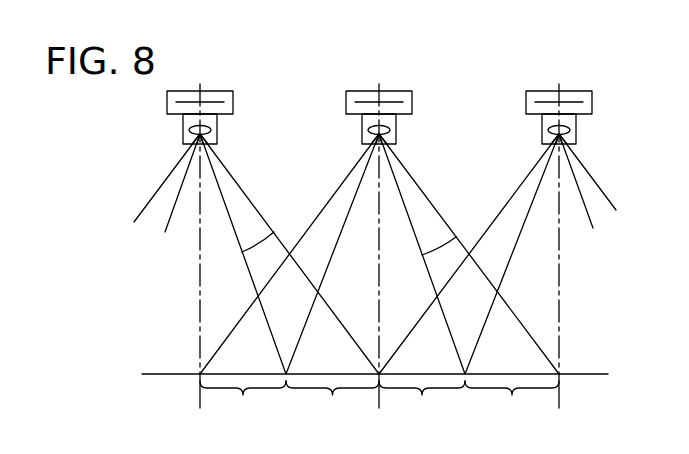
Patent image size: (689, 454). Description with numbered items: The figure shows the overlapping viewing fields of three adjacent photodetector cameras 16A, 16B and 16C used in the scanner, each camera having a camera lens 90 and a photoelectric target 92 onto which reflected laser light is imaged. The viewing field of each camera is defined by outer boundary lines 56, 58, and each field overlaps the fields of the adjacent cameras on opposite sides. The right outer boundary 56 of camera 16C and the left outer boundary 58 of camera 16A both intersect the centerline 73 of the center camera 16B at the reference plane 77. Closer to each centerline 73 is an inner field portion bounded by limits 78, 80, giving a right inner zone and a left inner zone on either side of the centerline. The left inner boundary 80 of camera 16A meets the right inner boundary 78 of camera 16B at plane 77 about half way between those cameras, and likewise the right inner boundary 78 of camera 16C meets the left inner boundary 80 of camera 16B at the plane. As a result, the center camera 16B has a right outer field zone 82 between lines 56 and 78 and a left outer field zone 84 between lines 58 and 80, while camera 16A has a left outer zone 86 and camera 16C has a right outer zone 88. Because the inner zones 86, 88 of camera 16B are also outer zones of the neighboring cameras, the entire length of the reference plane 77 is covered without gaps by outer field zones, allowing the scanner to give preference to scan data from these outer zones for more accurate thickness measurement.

The camera 16A is at (577, 90).
The camera 16B is at (401, 89).
The camera 16C is at (212, 89).
The photoelectric target 92 is at (372, 99).
The camera lens 90 is at (391, 129).
The right outer boundary line 56 is at (228, 172).
The left outer boundary line 58 is at (147, 203).
The left inner field boundary 80 is at (174, 210).
The right inner field boundary 78 is at (274, 232).
The centerline 73 is at (197, 301).
The reference plane 77 is at (163, 373).
The left outer field zone 84 is at (243, 406).
The right outer zone 88 is at (332, 406).
The left outer zone 86 is at (422, 406).
The right outer field zone 82 is at (512, 406).